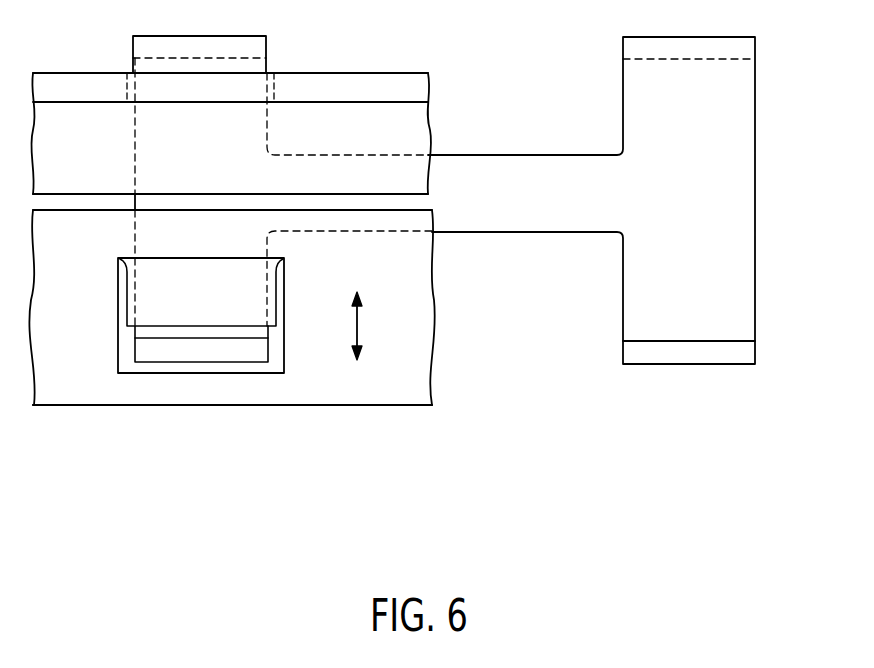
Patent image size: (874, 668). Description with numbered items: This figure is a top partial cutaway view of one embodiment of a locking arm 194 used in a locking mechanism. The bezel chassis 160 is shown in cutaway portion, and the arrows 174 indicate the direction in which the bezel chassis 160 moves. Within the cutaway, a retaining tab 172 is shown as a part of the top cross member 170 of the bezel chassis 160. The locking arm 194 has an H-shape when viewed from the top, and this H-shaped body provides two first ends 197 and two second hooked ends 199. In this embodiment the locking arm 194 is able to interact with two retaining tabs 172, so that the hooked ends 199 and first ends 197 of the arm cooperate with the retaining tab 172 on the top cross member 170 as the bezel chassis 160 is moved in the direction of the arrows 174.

The bezel chassis 160 is at (405, 410).
The top cross member 170 is at (88, 392).
The retaining tab 172 is at (246, 307).
The arrows 174 is at (359, 327).
The locking arm 194 is at (512, 170).
The first ends 197 is at (192, 348).
The second hooked ends 199 is at (262, 47).